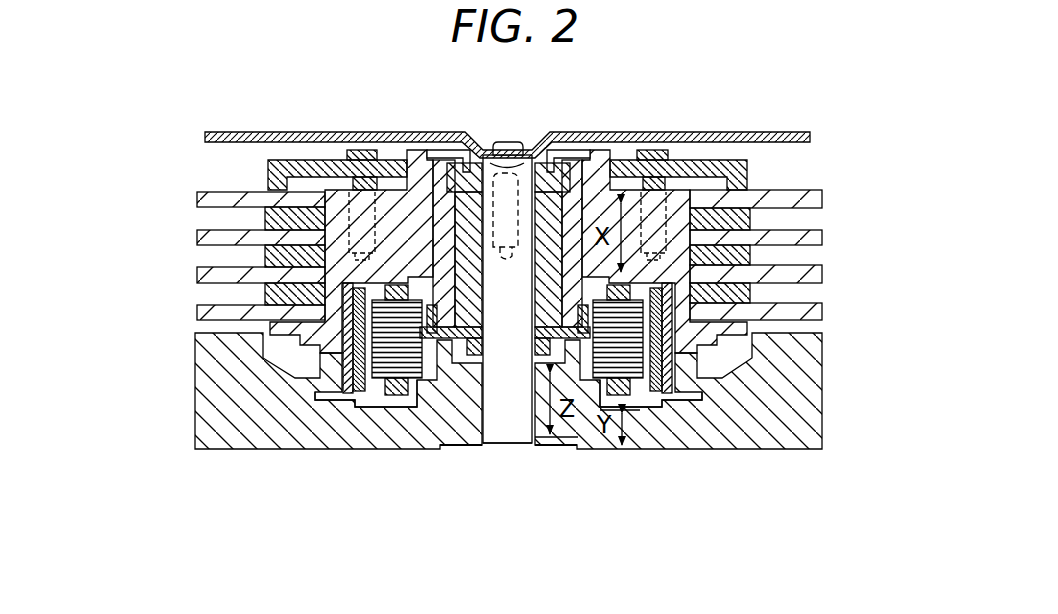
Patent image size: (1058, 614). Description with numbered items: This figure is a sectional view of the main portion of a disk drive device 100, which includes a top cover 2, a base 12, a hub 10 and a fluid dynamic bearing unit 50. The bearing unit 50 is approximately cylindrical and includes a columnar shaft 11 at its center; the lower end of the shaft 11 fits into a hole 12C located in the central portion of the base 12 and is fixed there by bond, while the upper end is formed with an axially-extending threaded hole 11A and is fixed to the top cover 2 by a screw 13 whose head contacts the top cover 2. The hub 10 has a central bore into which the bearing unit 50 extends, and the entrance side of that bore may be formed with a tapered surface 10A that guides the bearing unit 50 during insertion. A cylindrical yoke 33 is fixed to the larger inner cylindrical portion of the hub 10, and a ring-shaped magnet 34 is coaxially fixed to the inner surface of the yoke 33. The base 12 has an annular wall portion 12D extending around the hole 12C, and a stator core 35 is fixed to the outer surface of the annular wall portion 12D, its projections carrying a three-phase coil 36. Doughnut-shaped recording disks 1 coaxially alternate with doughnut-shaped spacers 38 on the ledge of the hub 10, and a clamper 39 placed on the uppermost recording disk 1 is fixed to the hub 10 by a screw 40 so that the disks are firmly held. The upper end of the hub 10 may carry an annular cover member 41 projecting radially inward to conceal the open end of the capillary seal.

The disk drive device 100 is at (643, 102).
The fluid dynamic bearing unit (FDB) 50 is at (506, 456).
The recording disk 1 is at (200, 199).
The top cover 2 is at (239, 132).
The hub 10 is at (240, 380).
The tapered surface 10A is at (422, 245).
The shaft 11 is at (519, 437).
The threaded hole 11A is at (533, 150).
The base 12 is at (772, 433).
The hole 12C is at (482, 403).
The annular wall portion 12D is at (434, 358).
The screw 13 is at (498, 136).
The yoke 33 is at (332, 358).
The magnet 34 is at (359, 390).
The stator core 35 is at (398, 395).
The coil 36 is at (633, 395).
The spacer 38 is at (277, 221).
The clamper 39 is at (266, 163).
The screw 40 is at (346, 150).
The cover member 41 is at (441, 151).